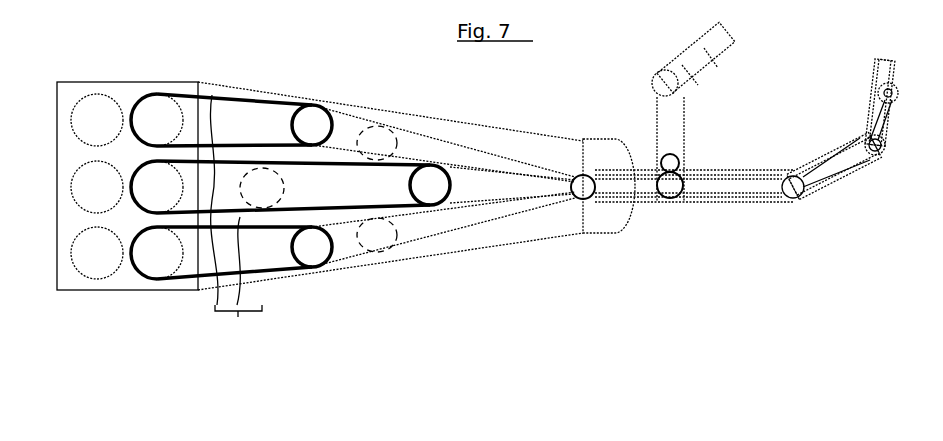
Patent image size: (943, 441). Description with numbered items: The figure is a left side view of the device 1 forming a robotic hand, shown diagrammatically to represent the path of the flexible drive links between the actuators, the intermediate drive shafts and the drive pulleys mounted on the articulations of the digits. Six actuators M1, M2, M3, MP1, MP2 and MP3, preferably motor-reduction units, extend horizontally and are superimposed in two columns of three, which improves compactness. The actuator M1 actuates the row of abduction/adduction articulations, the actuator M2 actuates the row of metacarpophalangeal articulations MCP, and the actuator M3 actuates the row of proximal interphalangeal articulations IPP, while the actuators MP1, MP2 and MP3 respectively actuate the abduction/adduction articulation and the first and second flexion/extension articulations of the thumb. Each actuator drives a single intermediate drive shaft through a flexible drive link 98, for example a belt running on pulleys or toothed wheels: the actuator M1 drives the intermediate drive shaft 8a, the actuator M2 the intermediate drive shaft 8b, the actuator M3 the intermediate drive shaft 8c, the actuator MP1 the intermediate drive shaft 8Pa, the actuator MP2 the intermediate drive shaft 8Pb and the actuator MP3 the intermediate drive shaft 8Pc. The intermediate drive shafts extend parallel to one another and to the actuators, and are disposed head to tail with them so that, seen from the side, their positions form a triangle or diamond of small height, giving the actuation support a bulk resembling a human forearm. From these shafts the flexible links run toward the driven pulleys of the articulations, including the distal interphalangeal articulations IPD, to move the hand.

The device forming a robotic hand 1 is at (658, 276).
The intermediate drive shaft 8a is at (255, 175).
The intermediate drive shaft 8b is at (312, 260).
The intermediate drive shaft 8c is at (318, 115).
The intermediate drive shaft 8Pa is at (433, 193).
The intermediate drive shaft 8Pb is at (383, 243).
The intermediate drive shaft 8Pc is at (382, 130).
The flexible drive link 98 is at (238, 325).
The actuator M1 is at (88, 175).
The actuator M2 is at (157, 267).
The actuator M3 is at (167, 107).
The actuator MP1 is at (143, 193).
The actuator MP2 is at (97, 264).
The actuator MP3 is at (87, 122).
The metacarpophalangeal articulations MCP is at (795, 192).
The proximal interphalangeal articulations IPP is at (878, 153).
The distal interphalangeal articulations IPD is at (880, 93).